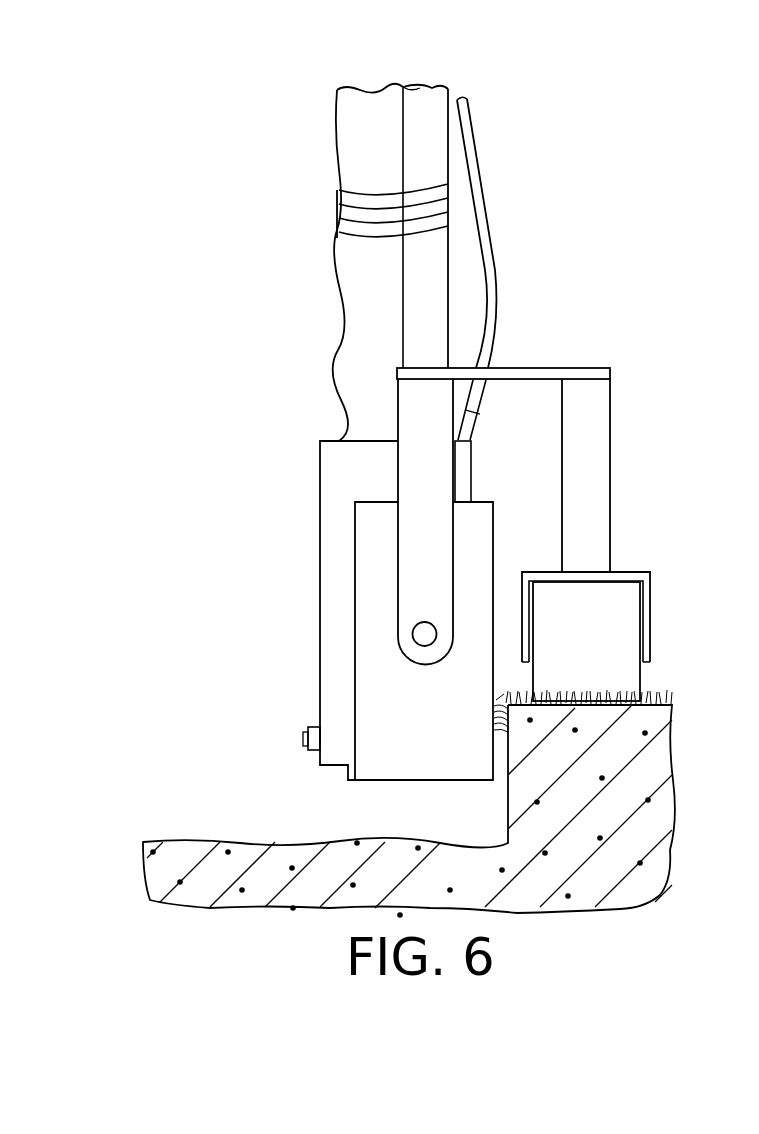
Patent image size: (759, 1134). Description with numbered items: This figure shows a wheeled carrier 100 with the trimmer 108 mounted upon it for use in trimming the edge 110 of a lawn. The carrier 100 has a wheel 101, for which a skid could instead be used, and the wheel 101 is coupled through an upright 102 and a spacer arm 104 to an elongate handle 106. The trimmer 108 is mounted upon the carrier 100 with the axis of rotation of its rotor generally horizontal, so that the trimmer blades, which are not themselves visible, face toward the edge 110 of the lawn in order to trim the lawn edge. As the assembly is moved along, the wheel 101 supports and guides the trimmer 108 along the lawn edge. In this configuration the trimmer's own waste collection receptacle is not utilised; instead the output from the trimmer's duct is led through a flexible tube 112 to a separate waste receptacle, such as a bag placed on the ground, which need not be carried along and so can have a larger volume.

The carrier 100 is at (583, 313).
The wheel 101 is at (602, 613).
The upright 102 is at (611, 428).
The spacer arm 104 is at (523, 369).
The elongate handle 106 is at (432, 277).
The trimmer 108 is at (309, 640).
The edge of the lawn 110 is at (507, 802).
The flexible tube 112 is at (343, 310).